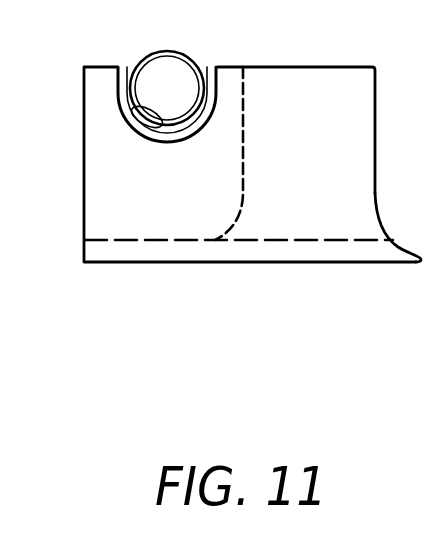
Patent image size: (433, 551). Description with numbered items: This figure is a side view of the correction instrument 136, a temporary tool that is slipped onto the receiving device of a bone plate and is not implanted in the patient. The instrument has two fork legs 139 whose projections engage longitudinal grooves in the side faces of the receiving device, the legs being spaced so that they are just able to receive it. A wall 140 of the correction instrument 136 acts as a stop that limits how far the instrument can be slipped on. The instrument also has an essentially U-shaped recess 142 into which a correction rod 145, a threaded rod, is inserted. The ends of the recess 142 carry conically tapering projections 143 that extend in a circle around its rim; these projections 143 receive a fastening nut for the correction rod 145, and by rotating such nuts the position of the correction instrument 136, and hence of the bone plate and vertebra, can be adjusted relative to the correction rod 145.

The correction instrument 136 is at (355, 289).
The fork legs 139 is at (427, 205).
The wall 140 is at (243, 173).
The U-shaped recess 142 is at (132, 110).
The conically tapering projections 143 is at (144, 71).
The correction rod 145 is at (175, 79).